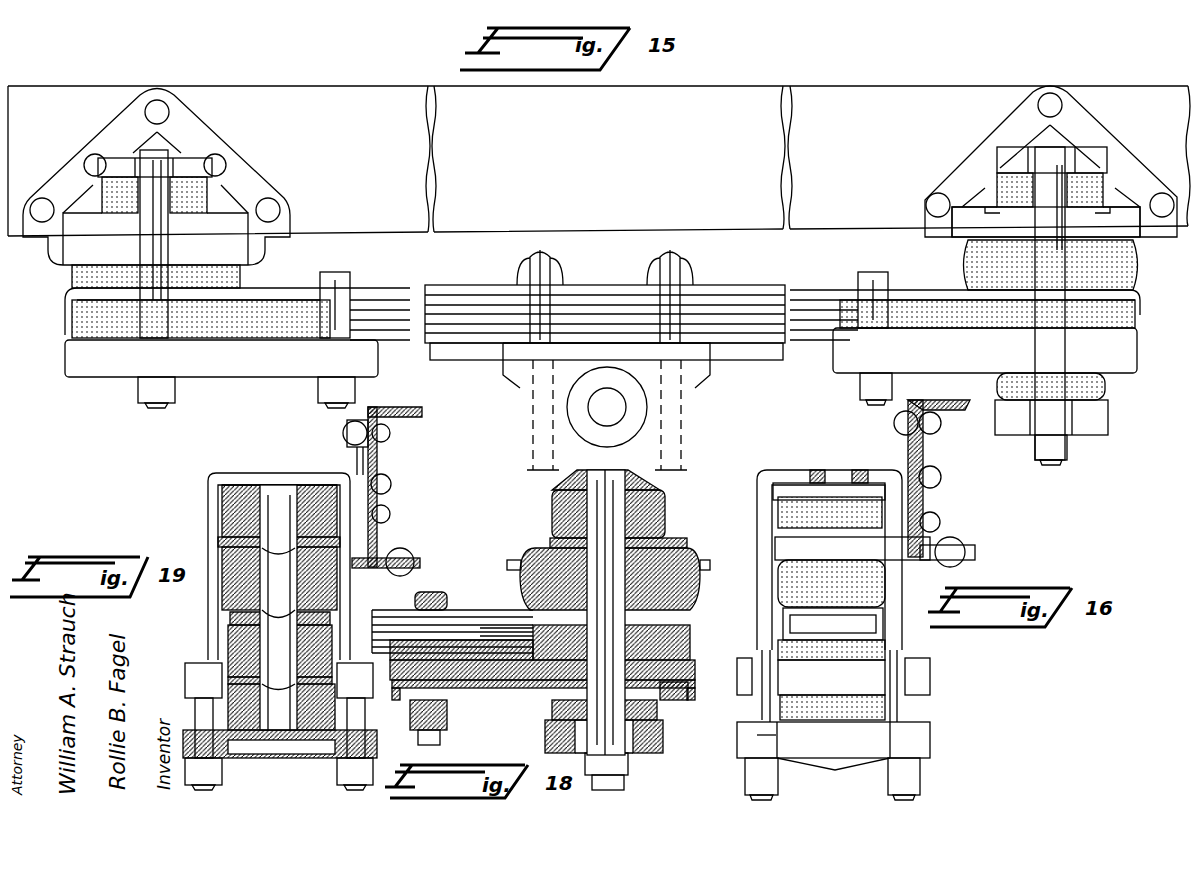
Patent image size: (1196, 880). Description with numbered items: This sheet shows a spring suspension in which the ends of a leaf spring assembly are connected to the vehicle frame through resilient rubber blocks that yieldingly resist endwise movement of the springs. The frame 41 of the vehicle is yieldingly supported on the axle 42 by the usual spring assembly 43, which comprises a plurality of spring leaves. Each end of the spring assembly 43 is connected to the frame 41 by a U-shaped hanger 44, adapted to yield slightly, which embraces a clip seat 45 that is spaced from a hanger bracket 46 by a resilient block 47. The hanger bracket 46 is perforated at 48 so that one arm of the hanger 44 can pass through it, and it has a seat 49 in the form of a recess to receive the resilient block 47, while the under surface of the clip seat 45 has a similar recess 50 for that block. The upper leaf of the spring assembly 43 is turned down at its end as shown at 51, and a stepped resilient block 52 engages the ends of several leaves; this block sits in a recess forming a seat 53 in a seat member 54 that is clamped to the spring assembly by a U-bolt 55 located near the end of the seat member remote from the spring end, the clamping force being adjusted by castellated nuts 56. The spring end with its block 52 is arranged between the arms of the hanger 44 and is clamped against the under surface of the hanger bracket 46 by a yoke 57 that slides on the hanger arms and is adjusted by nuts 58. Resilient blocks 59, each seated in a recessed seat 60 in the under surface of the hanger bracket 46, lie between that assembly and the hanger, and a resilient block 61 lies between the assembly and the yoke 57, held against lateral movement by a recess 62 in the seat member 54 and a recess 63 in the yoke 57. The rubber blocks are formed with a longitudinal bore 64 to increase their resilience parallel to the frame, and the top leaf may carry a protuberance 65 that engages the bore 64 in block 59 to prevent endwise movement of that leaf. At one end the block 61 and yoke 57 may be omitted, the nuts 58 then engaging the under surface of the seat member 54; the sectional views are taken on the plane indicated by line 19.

In FIG. 18, the section line 19— 19 is at (608, 472).
In FIG. 15, the frame 41 is at (718, 122).
In FIG. 19, the frame 41 is at (398, 412).
In FIG. 16, the frame 41 is at (932, 405).
In FIG. 15, the axle 42 is at (595, 412).
In FIG. 15, the spring assembly 43 is at (748, 292).
In FIG. 15, the hanger 44 is at (215, 215).
In FIG. 19, the hanger 44 is at (285, 482).
In FIG. 16, the hanger 44 is at (762, 575).
In FIG. 15, the clip seat 45 is at (192, 168).
In FIG. 19, the clip seat 45 is at (268, 482).
In FIG. 16, the clip seat 45 is at (792, 485).
In FIG. 15, the hanger bracket 46 is at (987, 223).
In FIG. 19, the hanger bracket 46 is at (215, 545).
In FIG. 18, the hanger bracket 46 is at (667, 537).
In FIG. 16, the hanger bracket 46 is at (865, 545).
In FIG. 15, the resilient block 47 is at (157, 215).
In FIG. 19, the resilient block 47 is at (215, 478).
In FIG. 18, the resilient block 47 is at (555, 520).
In FIG. 16, the resilient block 47 is at (852, 512).
In FIG. 19, the perforation 48 is at (395, 576).
In FIG. 19, the seat 49 is at (305, 520).
In FIG. 19, the recess 50 is at (378, 480).
In FIG. 15, the turned-down end of upper leaf 51 is at (65, 300).
In FIG. 18, the turned-down end of upper leaf 51 is at (690, 640).
In FIG. 16, the turned-down end of upper leaf 51 is at (860, 625).
In FIG. 15, the resilient block 52 is at (76, 326).
In FIG. 19, the resilient block 52 is at (232, 648).
In FIG. 18, the resilient block 52 is at (482, 626).
In FIG. 16, the resilient block 52 is at (882, 650).
In FIG. 19, the seat 53 is at (205, 700).
In FIG. 18, the seat 53 is at (692, 665).
In FIG. 16, the seat 53 is at (775, 622).
In FIG. 15, the seat member 54 is at (215, 352).
In FIG. 19, the seat member 54 is at (198, 680).
In FIG. 18, the seat member 54 is at (697, 690).
In FIG. 16, the seat member 54 is at (745, 680).
In FIG. 15, the U-bolt 55 is at (342, 282).
In FIG. 18, the U-bolt 55 is at (440, 595).
In FIG. 15, the castellated nuts 56 is at (346, 384).
In FIG. 16, the castellated nuts 56 is at (758, 736).
In FIG. 15, the yoke 57 is at (1098, 418).
In FIG. 19, the yoke 57 is at (376, 745).
In FIG. 18, the yoke 57 is at (662, 740).
In FIG. 16, the yoke 57 is at (922, 740).
In FIG. 15, the nuts 58 is at (142, 386).
In FIG. 19, the nuts 58 is at (335, 768).
In FIG. 18, the nuts 58 is at (628, 766).
In FIG. 16, the nuts 58 is at (748, 775).
In FIG. 15, the resilient block 59 is at (205, 286).
In FIG. 19, the resilient block 59 is at (340, 560).
In FIG. 18, the resilient block 59 is at (682, 558).
In FIG. 16, the resilient block 59 is at (860, 580).
In FIG. 18, the recessed seat 60 is at (530, 543).
In FIG. 15, the resilient block 61 is at (1098, 386).
In FIG. 19, the resilient block 61 is at (330, 706).
In FIG. 18, the resilient block 61 is at (556, 712).
In FIG. 16, the resilient block 61 is at (882, 706).
In FIG. 18, the recess 62 is at (510, 650).
In FIG. 18, the recess 63 is at (678, 696).
In FIG. 19, the longitudinal bore 64 is at (332, 500).
In FIG. 18, the longitudinal bore 64 is at (600, 507).
In FIG. 19, the protuberance 65 is at (242, 615).